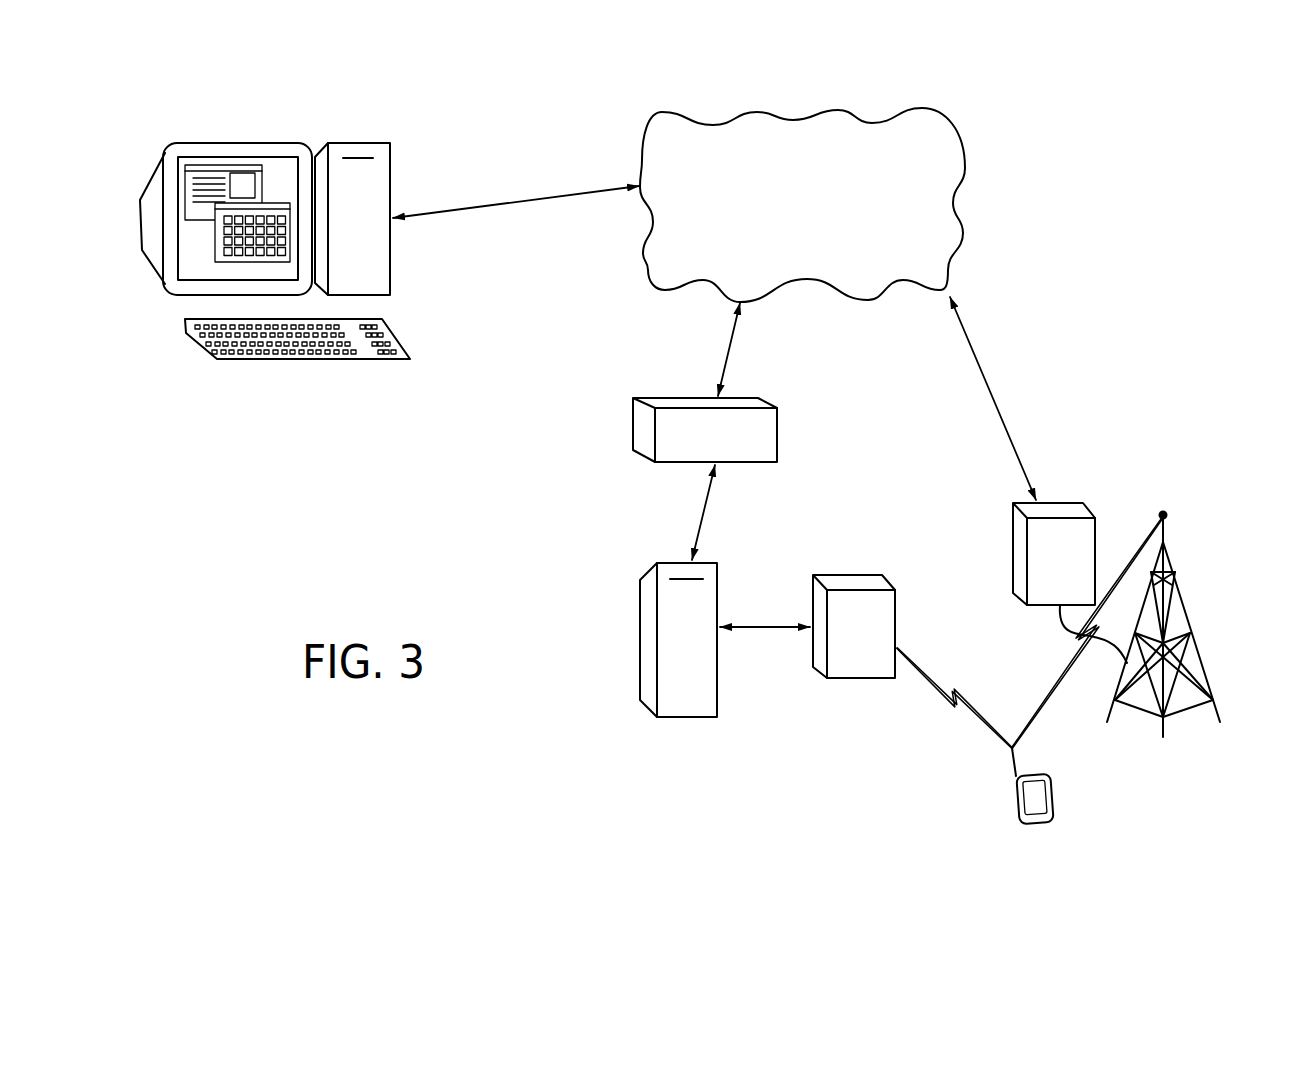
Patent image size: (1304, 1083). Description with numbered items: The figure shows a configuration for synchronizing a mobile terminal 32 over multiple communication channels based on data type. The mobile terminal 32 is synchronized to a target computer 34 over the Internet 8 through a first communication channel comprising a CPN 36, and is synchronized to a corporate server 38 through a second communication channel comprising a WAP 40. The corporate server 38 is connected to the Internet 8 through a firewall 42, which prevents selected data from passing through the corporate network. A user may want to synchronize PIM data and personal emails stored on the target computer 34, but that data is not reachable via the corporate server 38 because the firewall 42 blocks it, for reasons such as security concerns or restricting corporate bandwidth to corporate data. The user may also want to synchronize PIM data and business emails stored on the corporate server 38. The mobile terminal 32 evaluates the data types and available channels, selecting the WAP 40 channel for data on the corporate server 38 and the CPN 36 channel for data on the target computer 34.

The Internet 8 is at (982, 117).
The mobile terminal 32 is at (1064, 802).
The target computer 34 is at (424, 177).
The CPN 36 is at (1103, 485).
The corporate server 38 is at (631, 562).
The WAP 40 is at (874, 564).
The firewall 42 is at (626, 439).